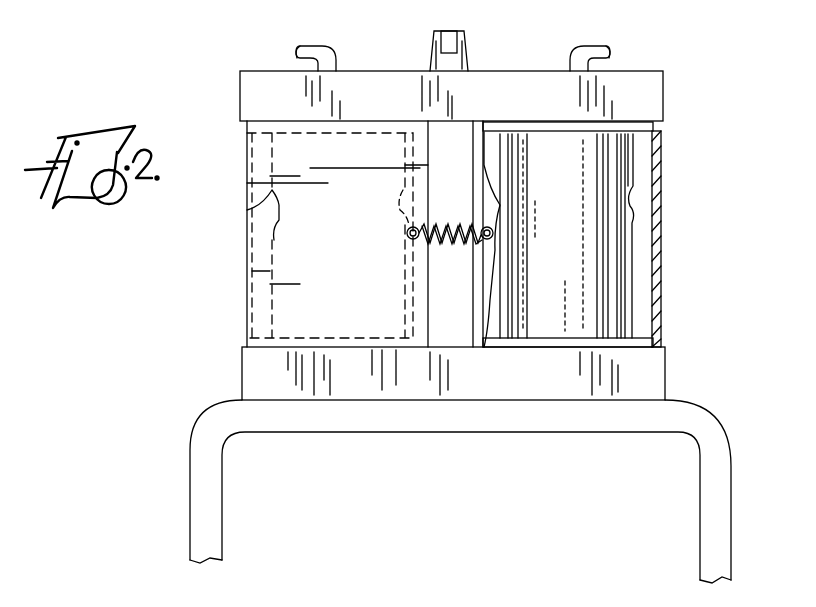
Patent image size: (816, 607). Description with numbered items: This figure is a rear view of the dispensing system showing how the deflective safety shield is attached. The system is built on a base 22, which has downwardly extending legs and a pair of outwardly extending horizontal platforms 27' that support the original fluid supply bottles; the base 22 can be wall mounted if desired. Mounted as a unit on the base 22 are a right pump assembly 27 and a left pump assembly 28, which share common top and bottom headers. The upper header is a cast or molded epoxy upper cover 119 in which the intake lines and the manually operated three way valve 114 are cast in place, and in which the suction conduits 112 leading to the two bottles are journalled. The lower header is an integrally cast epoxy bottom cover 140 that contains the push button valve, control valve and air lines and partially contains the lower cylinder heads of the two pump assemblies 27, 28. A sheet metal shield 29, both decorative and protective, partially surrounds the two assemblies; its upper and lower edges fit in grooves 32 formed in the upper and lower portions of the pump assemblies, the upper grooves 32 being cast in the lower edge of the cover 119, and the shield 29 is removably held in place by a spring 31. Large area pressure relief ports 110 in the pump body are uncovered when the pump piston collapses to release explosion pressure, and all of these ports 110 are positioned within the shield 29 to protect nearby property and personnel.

The base 22 is at (716, 490).
The pump assembly 27 is at (300, 234).
The horizontal platform 27' is at (692, 13).
The pump assembly 28 is at (618, 155).
The sheet metal shield 29 is at (655, 269).
The spring 31 is at (428, 251).
The grooves 32 is at (658, 127).
The pressure relief ports 110 is at (244, 216).
The suction conduit 112 is at (318, 42).
The three way valve 114 is at (455, 37).
The upper cover 119 is at (648, 93).
The bottom cover 140 is at (648, 372).